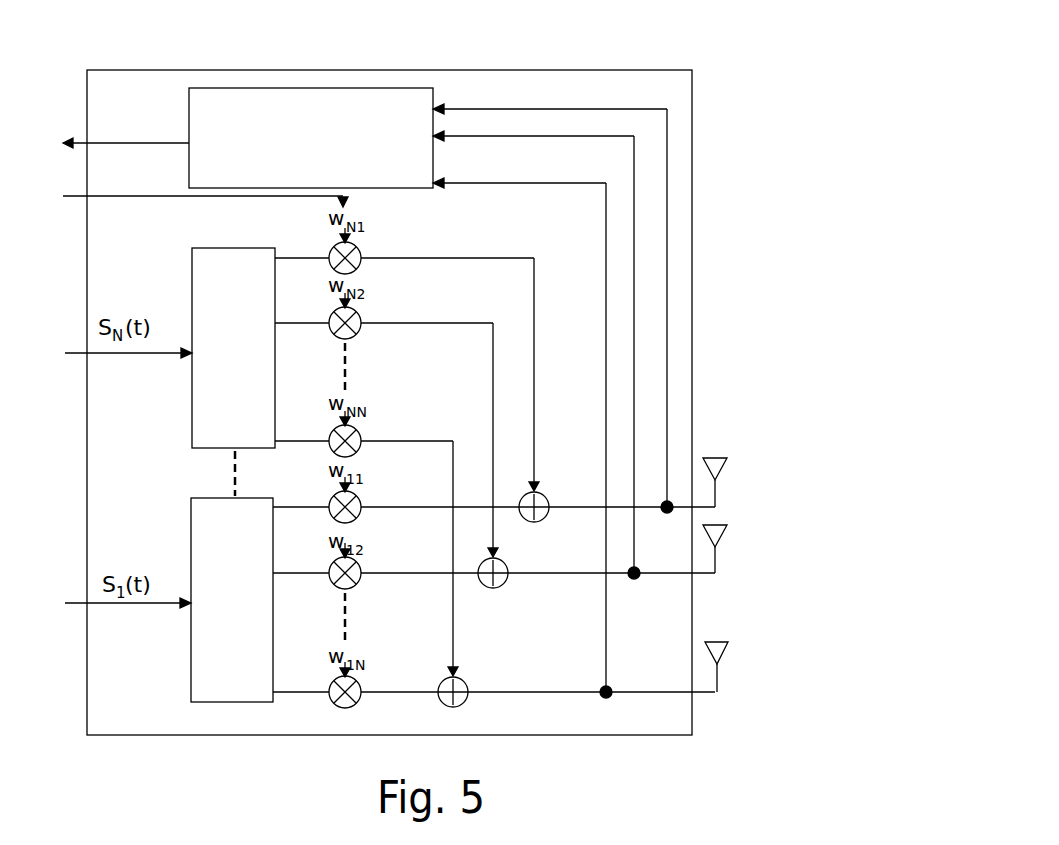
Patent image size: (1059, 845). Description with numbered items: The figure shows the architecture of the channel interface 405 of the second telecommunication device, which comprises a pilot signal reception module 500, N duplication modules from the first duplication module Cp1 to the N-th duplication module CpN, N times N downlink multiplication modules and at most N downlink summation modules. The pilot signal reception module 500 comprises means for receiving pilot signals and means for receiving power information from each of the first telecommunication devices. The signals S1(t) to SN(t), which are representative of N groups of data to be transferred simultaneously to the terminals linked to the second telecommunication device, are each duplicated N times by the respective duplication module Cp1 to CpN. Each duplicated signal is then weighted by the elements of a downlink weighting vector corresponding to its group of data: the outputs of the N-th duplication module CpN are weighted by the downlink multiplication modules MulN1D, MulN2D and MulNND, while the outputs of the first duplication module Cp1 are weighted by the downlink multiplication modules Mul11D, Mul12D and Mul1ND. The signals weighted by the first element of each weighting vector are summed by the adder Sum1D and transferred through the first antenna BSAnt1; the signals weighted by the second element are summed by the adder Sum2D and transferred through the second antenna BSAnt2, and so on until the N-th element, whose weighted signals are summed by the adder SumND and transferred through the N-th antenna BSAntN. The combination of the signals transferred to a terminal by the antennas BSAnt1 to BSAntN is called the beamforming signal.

The channel interface 405 is at (417, 70).
The pilot signal reception module 500 is at (235, 88).
The duplication module CpN is at (245, 248).
The duplication module Cp1 is at (193, 530).
The downlink multiplication module MulN1D is at (360, 251).
The downlink multiplication module MulN2D is at (360, 318).
The downlink multiplication module MulNND is at (360, 434).
The downlink multiplication module Mul11D is at (361, 500).
The downlink multiplication module Mul12D is at (360, 566).
The downlink multiplication module Mul1ND is at (360, 685).
The downlink summation module Sum1D is at (567, 474).
The downlink summation module Sum2D is at (506, 565).
The downlink summation module SumND is at (466, 683).
The first antenna BSAnt1 is at (720, 458).
The second antenna BSAnt2 is at (717, 525).
The N-th antenna BSAntN is at (727, 642).